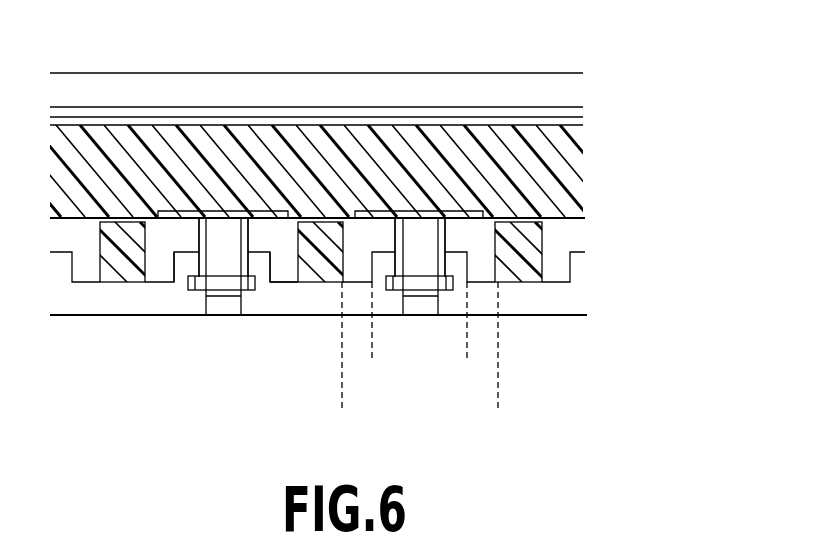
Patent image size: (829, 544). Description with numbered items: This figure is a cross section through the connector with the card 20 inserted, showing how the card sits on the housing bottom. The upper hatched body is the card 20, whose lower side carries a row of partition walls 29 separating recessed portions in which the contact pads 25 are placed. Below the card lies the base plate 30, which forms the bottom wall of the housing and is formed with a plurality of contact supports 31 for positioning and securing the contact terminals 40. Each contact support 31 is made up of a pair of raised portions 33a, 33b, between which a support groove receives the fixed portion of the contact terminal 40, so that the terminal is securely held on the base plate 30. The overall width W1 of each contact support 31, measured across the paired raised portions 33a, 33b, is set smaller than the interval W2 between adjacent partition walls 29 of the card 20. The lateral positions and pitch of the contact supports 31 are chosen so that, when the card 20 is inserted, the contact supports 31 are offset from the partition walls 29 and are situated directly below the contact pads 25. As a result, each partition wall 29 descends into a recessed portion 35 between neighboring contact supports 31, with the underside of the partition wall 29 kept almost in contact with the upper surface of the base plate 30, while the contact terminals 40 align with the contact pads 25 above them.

The card 20 is at (572, 160).
The contact pad 25 is at (230, 217).
The partition wall 29 is at (113, 282).
The base plate 30 is at (538, 308).
The contact support 31 is at (262, 232).
The raised portion 33a is at (187, 268).
The raised portion 33b is at (258, 267).
The recessed portion 35 is at (280, 268).
The contact terminal 40 is at (212, 232).
The overall width of contact support W1 is at (466, 352).
The interval between partition walls W2 is at (497, 397).